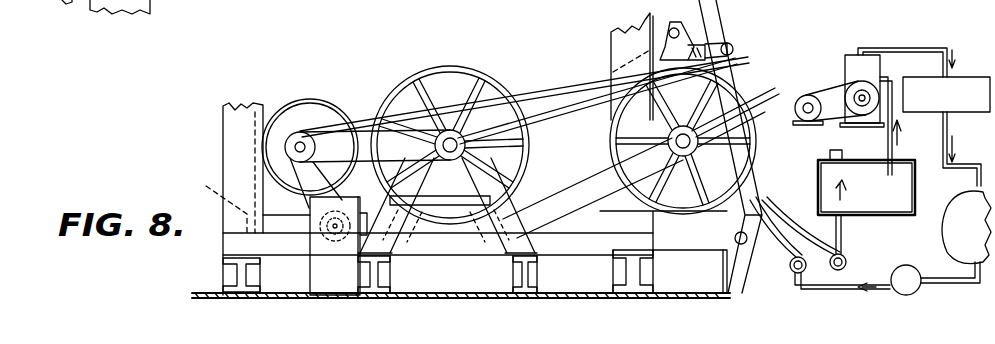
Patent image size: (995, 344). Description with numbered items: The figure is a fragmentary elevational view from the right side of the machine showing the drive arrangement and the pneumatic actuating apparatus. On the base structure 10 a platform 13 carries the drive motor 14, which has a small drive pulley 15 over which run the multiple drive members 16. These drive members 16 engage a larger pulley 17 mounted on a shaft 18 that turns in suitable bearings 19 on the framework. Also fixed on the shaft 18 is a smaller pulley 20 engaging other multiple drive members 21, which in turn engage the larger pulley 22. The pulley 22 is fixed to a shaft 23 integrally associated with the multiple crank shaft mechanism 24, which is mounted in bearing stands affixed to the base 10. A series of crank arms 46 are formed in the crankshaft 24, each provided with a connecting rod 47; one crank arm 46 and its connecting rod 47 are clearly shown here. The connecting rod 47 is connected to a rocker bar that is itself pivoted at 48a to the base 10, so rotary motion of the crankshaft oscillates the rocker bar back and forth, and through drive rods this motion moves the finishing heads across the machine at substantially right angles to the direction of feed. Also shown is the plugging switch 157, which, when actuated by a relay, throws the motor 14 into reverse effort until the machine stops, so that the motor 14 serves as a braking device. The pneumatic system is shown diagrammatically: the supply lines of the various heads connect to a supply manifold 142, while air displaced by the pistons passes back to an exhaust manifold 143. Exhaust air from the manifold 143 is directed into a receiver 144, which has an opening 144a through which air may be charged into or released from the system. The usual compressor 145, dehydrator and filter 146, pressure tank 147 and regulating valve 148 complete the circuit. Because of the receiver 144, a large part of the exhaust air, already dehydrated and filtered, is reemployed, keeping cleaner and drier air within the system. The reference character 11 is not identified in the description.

The base structure 10 is at (223, 276).
The frame 11 is at (223, 136).
The platform 13 is at (209, 202).
The drive motor 14 is at (300, 91).
The small drive pulley 15 is at (304, 132).
The multiple drive members 16 is at (576, 90).
The larger pulley 17 is at (740, 81).
The shaft 18 is at (742, 103).
The bearings 19 is at (657, 156).
The smaller pulley 20 is at (748, 121).
The multiple drive members 21 is at (587, 184).
The larger pulley 22 is at (453, 70).
The shaft 23 is at (438, 140).
The multiple crank shaft mechanism 24 is at (420, 188).
The crank arm 46 is at (374, 182).
The connecting rod 47 is at (535, 119).
The pivot 48a is at (734, 241).
The supply manifold 142 is at (793, 274).
The exhaust manifold 143 is at (848, 261).
The receiver 144 is at (820, 181).
The opening 144a is at (838, 152).
The compressor 145 is at (846, 63).
The dehydrator and filter 146 is at (933, 77).
The pressure tank 147 is at (970, 200).
The regulating valve 148 is at (925, 273).
The plugging switch 157 is at (335, 246).